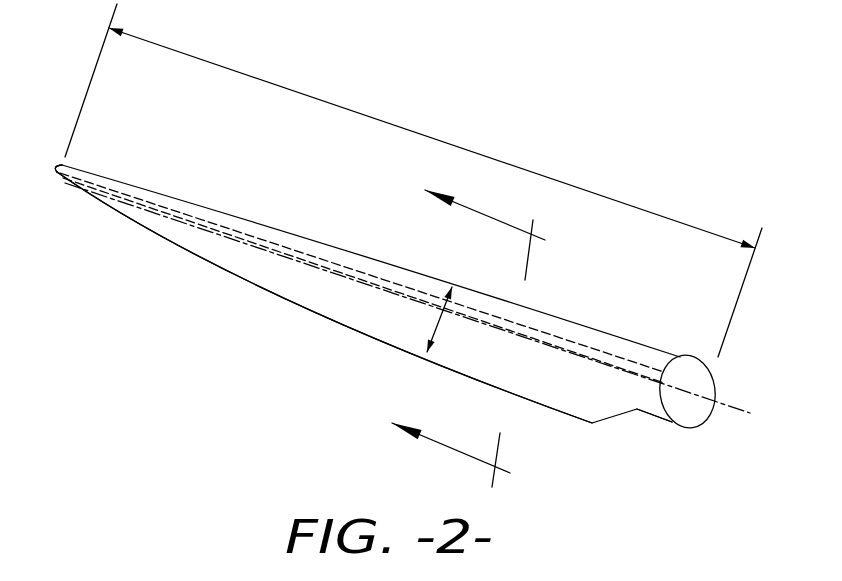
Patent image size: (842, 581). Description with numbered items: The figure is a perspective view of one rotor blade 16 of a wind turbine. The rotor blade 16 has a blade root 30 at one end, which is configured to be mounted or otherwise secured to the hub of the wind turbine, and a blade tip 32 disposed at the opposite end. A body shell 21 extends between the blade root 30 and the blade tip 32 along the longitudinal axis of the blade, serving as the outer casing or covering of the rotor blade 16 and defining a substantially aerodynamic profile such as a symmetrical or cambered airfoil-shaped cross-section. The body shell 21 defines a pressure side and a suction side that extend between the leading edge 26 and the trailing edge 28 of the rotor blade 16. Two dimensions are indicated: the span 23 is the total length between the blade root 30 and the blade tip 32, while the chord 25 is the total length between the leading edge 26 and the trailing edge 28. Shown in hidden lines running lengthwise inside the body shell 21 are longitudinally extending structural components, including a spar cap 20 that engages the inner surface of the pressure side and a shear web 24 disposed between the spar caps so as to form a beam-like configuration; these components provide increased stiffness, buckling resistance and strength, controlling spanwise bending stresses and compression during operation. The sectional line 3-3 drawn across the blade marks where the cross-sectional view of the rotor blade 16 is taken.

The rotor blade 16 is at (384, 278).
The spar cap 20 is at (338, 278).
The body shell 21 is at (267, 265).
The span 23 is at (342, 104).
The shear web 24 is at (58, 170).
The chord 25 is at (434, 318).
The leading edge 26 is at (342, 104).
The trailing edge 28 is at (555, 412).
The blade root 30 is at (678, 408).
The blade tip 32 is at (57, 167).
The sectional line 3- 3 is at (462, 321).